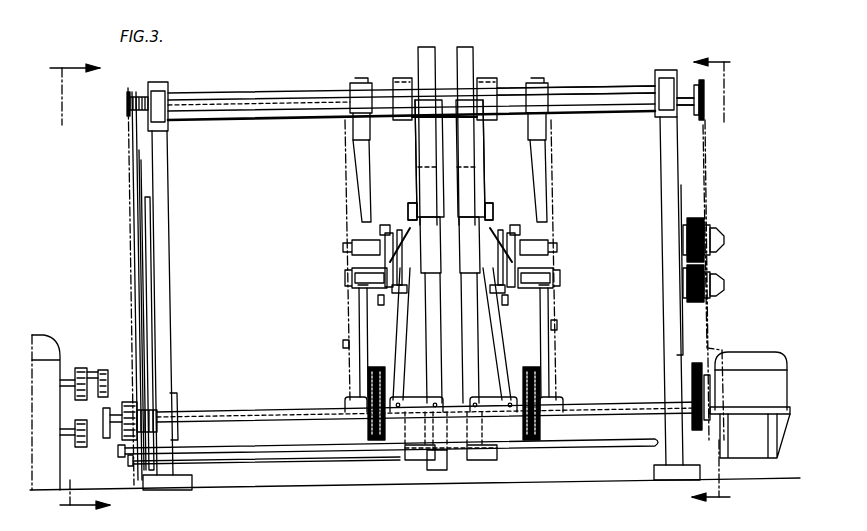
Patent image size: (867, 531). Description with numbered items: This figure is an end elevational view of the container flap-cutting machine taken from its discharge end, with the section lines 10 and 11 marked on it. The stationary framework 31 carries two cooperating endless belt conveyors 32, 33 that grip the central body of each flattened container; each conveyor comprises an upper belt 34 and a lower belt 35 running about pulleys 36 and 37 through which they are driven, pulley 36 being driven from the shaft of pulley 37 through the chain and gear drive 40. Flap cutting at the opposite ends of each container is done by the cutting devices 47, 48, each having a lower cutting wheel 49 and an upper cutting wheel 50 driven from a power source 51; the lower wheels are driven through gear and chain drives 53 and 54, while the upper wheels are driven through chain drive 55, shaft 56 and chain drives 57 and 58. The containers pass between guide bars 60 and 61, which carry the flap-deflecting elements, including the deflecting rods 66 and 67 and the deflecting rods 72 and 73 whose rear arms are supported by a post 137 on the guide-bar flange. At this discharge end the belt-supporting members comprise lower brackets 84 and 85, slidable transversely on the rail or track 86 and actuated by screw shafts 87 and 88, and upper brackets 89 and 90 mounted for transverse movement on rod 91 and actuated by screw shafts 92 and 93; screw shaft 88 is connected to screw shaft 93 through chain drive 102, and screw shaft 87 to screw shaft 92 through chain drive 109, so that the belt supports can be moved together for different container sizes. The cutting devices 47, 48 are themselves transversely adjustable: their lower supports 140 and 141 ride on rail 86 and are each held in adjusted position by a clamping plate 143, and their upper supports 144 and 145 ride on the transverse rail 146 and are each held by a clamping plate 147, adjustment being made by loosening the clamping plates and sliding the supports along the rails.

The section line 10- 10 is at (78, 288).
The section line 11- 11 is at (719, 281).
The stationary framework 31 is at (668, 363).
The conveyor 32 is at (389, 269).
The conveyor 33 is at (508, 268).
The upper belt 34 is at (466, 218).
The lower belt 35 is at (471, 322).
The pulley 36 is at (458, 58).
The pulley 37 is at (451, 449).
The chain and gear drive 40 is at (703, 260).
The cutting device 47 is at (352, 254).
The cutting device 48 is at (548, 250).
The lower cutting wheel 49 is at (398, 296).
The upper cutting wheel 50 is at (411, 218).
The power source 51 is at (760, 392).
The gear and chain drive 53 is at (345, 344).
The gear and chain drive 54 is at (552, 325).
The chain drive 55 is at (128, 270).
The shaft 56 is at (266, 95).
The chain drive 57 is at (344, 185).
The chain drive 58 is at (557, 195).
The guide bar 60 is at (538, 227).
The guide bar 61 is at (382, 246).
The deflecting rod 66 is at (504, 289).
The deflecting rod 67 is at (404, 309).
The deflecting rod 72 is at (499, 238).
The deflecting rod 73 is at (403, 239).
The lower bracket 84 is at (493, 348).
The lower bracket 85 is at (408, 354).
The rail or track 86 is at (600, 405).
The screw shaft 87 is at (582, 452).
The screw shaft 88 is at (328, 460).
The upper bracket 89 is at (497, 164).
The upper bracket 90 is at (406, 174).
The rod 91 is at (688, 98).
The screw shaft 92 is at (187, 103).
The screw shaft 93 is at (280, 123).
The chain drive 102 is at (147, 268).
The chain drive 109 is at (138, 207).
The post 137 is at (352, 271).
The lower support 140 is at (362, 315).
The lower support 141 is at (548, 310).
The clamping plate 143 is at (355, 427).
The upper support 144 is at (367, 188).
The upper support 145 is at (545, 150).
The transverse rail 146 is at (613, 86).
The clamping plate 147 is at (360, 82).